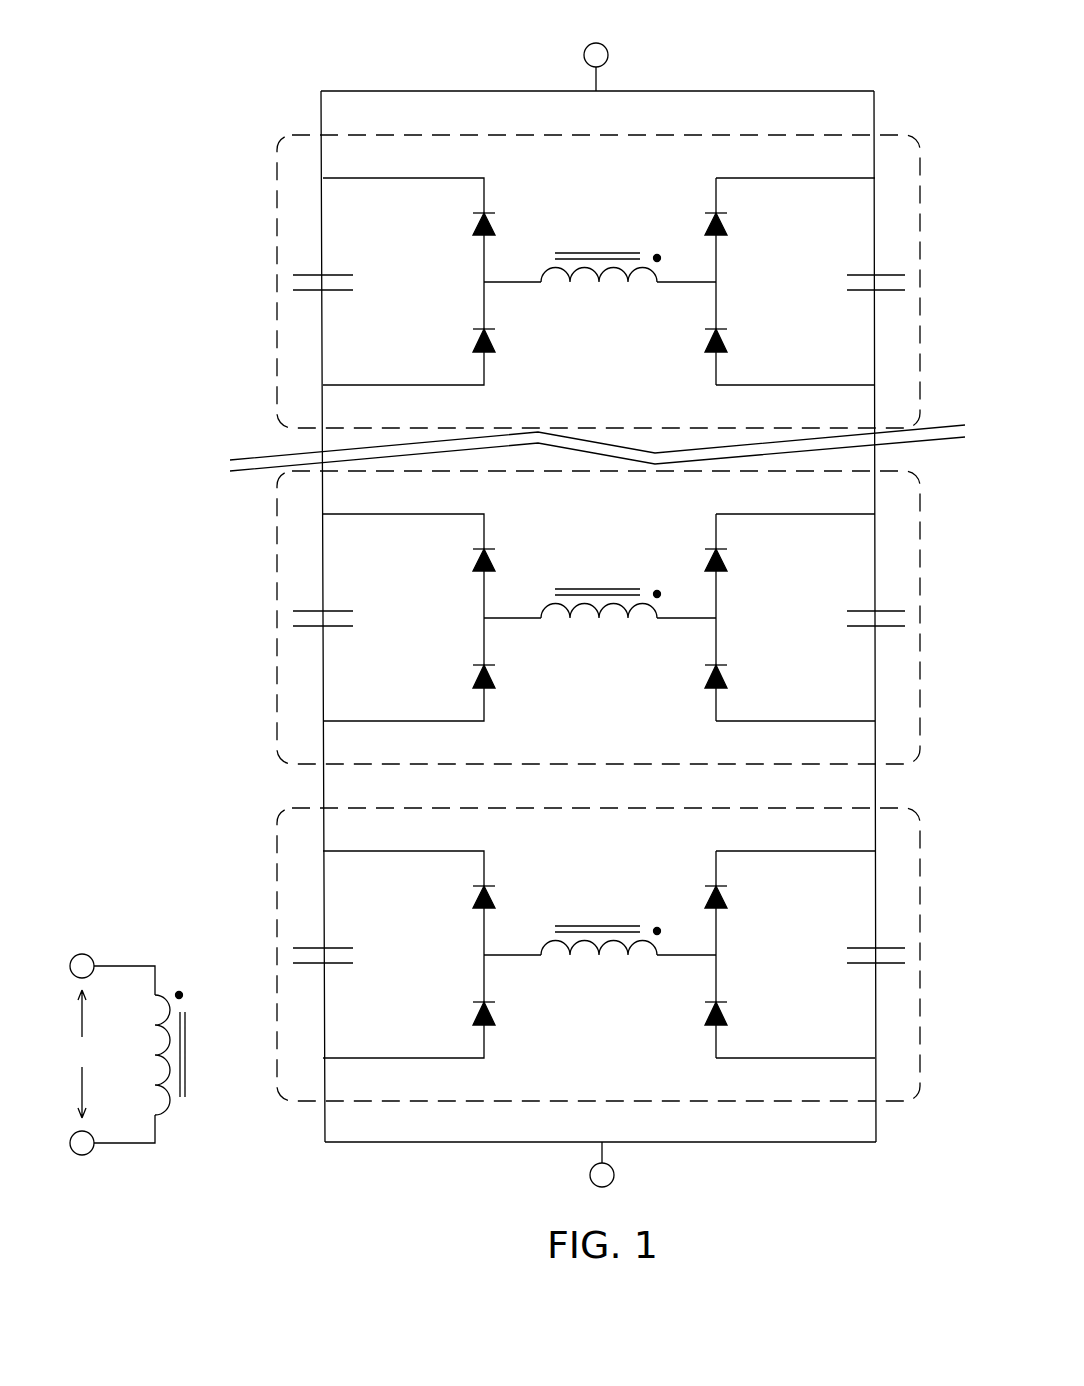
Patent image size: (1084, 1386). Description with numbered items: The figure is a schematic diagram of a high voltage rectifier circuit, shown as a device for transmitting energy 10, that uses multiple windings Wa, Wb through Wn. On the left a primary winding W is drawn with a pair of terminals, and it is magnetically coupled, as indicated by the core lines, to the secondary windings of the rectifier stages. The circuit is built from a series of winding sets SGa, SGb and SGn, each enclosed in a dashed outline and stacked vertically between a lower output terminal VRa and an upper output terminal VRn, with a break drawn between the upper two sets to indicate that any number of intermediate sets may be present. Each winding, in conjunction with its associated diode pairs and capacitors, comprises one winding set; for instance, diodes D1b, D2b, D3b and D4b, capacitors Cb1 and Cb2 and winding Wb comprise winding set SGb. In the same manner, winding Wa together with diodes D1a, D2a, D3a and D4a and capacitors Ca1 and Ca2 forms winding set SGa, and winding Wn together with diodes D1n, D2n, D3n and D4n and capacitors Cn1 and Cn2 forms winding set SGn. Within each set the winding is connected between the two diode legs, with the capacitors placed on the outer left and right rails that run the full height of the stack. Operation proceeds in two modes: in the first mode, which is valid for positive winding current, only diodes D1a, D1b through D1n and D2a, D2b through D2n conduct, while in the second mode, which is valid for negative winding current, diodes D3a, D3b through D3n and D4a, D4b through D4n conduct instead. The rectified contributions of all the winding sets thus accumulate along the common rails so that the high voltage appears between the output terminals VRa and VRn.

The device for transmitting energy 10 is at (143, 1024).
The primary winding W is at (152, 1062).
The output terminal n VRn is at (594, 57).
The output terminal a VRa is at (600, 1176).
The winding set SGn is at (563, 281).
The winding set SGb is at (563, 617).
The winding set SGa is at (563, 954).
The capacitor Cn1 is at (862, 258).
The capacitor Cn2 is at (334, 261).
The capacitor Cb1 is at (862, 594).
The capacitor Cb2 is at (334, 597).
The capacitor Ca1 is at (862, 931).
The capacitor Ca2 is at (334, 934).
The diode D1n is at (510, 341).
The diode D2n is at (685, 224).
The diode D3n is at (510, 224).
The diode D4n is at (685, 341).
The diode D1b is at (510, 677).
The diode D2b is at (685, 560).
The diode D3b is at (510, 560).
The diode D4b is at (685, 677).
The diode D1a is at (510, 1014).
The diode D2a is at (685, 897).
The diode D3a is at (510, 897).
The diode D4a is at (685, 1014).
The winding Wn is at (601, 248).
The winding Wb is at (601, 584).
The winding Wa is at (601, 921).